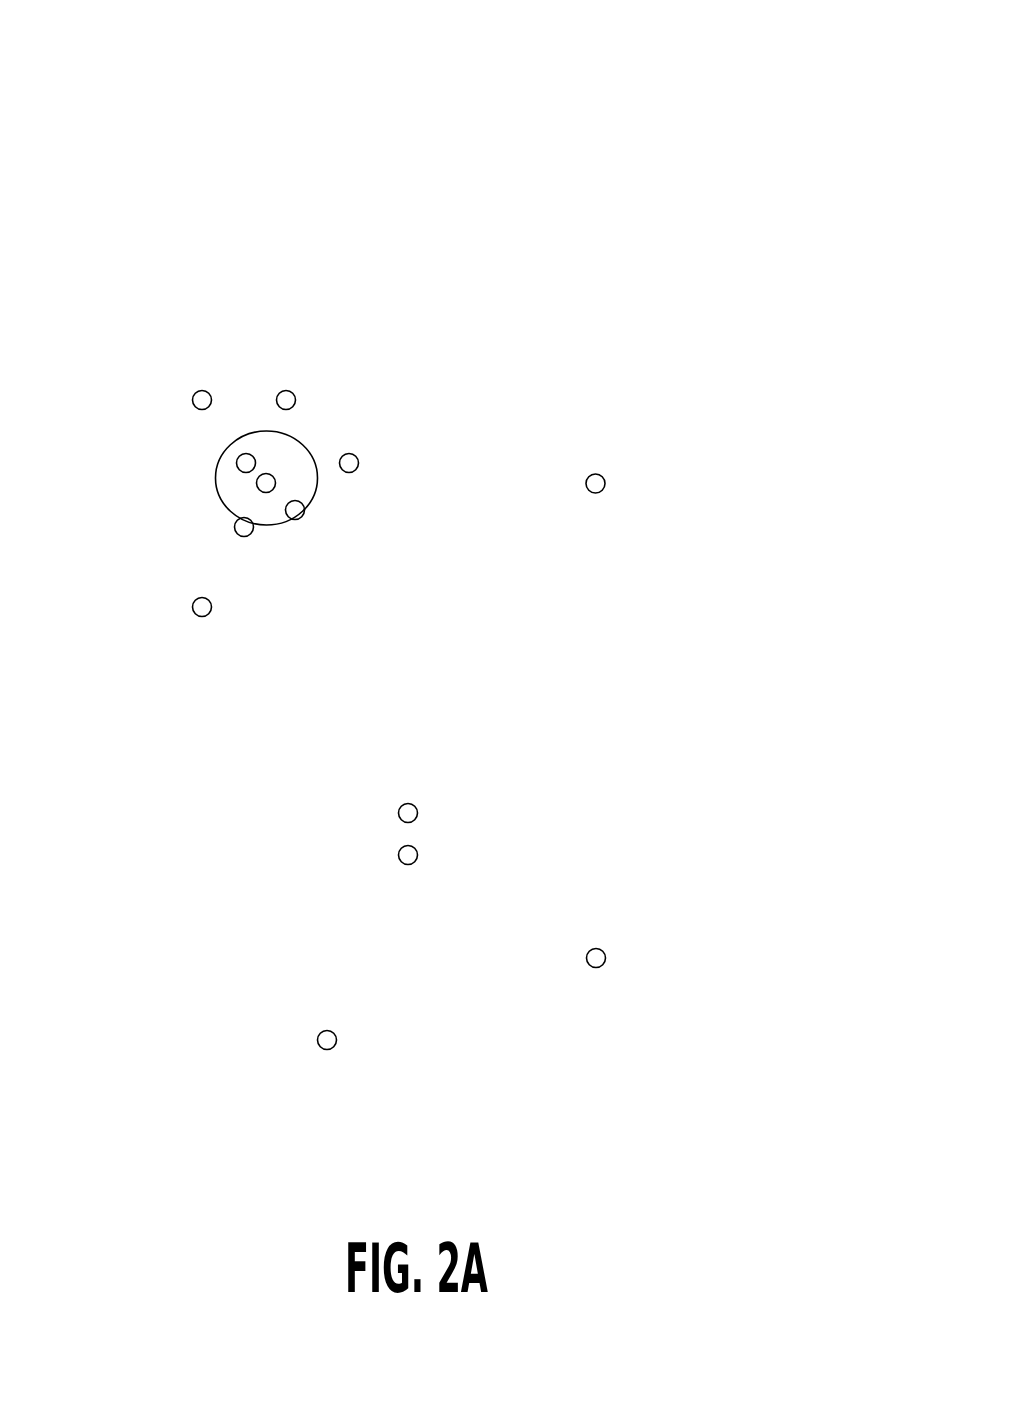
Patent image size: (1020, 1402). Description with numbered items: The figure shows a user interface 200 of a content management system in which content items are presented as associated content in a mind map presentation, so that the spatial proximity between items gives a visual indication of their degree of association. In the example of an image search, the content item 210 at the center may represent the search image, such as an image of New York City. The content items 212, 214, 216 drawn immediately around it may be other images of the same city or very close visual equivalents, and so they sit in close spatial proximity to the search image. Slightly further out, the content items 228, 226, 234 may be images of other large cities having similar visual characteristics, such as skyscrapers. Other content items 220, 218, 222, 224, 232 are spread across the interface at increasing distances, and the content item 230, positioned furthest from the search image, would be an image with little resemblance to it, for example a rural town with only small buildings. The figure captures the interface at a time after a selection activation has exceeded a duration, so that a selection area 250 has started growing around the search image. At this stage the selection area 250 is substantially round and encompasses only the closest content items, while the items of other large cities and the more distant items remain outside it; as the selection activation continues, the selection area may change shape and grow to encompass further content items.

The user interface 200 is at (730, 83).
The content item 210 is at (277, 472).
The content item 212 is at (235, 458).
The content item 214 is at (233, 524).
The content item 216 is at (306, 517).
The content item 218 is at (606, 477).
The content item 220 is at (212, 608).
The content item 222 is at (416, 805).
The content item 224 is at (418, 849).
The content item 226 is at (288, 389).
The content item 228 is at (205, 389).
The content item 230 is at (316, 1033).
The content item 232 is at (604, 948).
The content item 234 is at (358, 455).
The selection area 250 is at (317, 492).